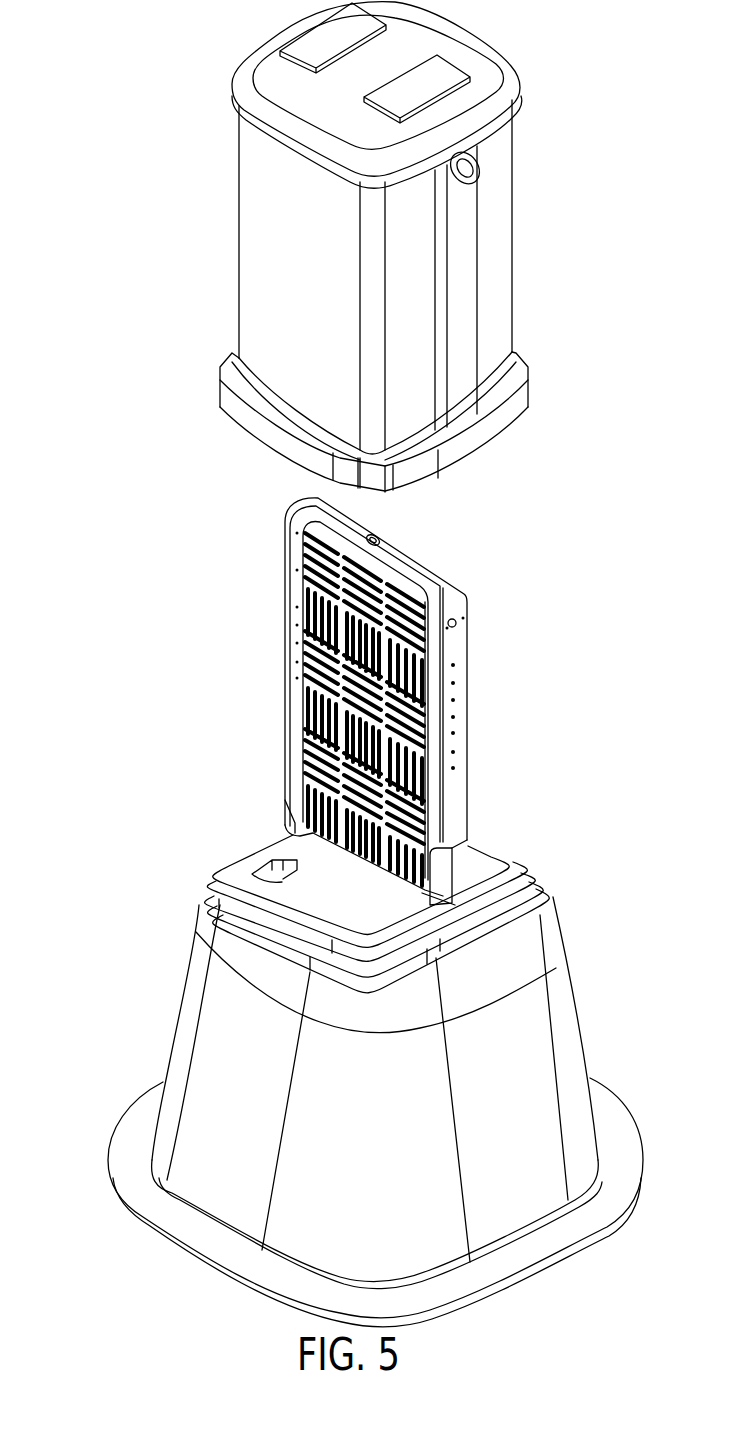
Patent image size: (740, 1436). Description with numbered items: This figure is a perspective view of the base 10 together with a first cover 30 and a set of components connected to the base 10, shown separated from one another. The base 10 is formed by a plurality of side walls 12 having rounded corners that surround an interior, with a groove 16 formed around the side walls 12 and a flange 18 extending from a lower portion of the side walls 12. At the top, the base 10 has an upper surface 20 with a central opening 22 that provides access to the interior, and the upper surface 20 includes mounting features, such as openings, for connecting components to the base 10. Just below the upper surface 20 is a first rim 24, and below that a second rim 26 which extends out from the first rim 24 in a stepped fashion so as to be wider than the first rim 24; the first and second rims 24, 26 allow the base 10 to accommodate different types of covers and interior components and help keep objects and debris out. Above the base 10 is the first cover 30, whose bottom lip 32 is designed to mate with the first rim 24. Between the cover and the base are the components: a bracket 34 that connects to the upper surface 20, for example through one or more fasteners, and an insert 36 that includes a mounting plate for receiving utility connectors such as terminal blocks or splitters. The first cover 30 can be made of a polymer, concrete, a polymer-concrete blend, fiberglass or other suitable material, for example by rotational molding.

The base 10 is at (115, 1000).
The side walls 12 is at (207, 1077).
The groove 16 is at (533, 973).
The flange 18 is at (160, 1203).
The upper surface 20 is at (248, 848).
The central opening 22 is at (297, 878).
The first rim 24 is at (533, 868).
The second rim 26 is at (543, 903).
The first cover 30 is at (513, 275).
The bottom lip 32 is at (503, 413).
The bracket 34 is at (460, 665).
The insert 36 is at (430, 747).